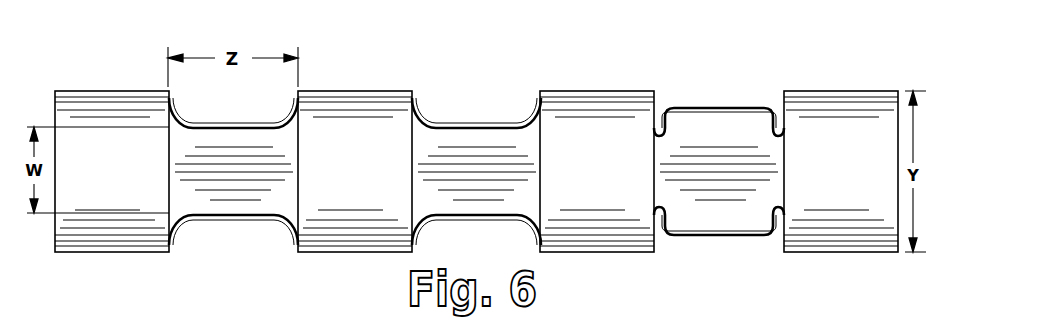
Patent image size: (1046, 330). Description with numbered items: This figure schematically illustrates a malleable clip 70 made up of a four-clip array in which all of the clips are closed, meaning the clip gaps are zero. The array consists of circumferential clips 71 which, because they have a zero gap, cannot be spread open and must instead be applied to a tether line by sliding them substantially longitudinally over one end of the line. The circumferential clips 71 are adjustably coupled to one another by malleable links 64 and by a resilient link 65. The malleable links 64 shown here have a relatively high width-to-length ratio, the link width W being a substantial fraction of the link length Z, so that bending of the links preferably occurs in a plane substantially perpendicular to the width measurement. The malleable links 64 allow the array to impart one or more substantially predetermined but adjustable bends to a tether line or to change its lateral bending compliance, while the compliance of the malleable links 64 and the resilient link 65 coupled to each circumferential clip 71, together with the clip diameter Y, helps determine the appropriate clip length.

The malleable clip 70 is at (461, 130).
The circumferential clip 71 is at (132, 78).
The malleable link 64 is at (218, 123).
The resilient link 65 is at (703, 107).